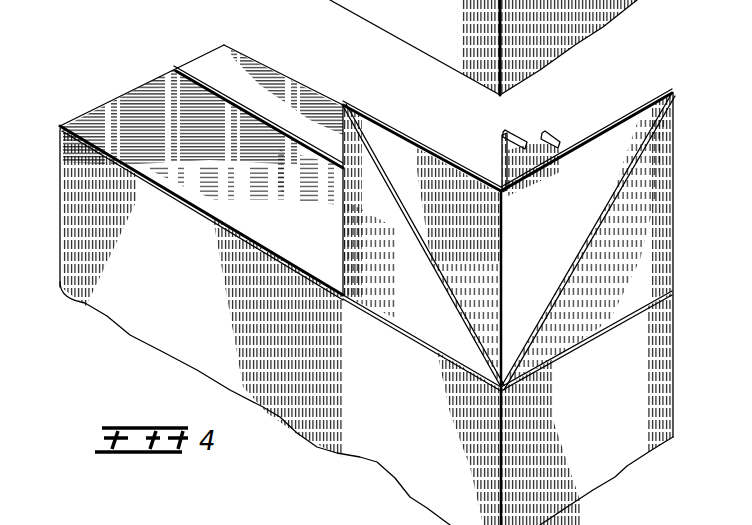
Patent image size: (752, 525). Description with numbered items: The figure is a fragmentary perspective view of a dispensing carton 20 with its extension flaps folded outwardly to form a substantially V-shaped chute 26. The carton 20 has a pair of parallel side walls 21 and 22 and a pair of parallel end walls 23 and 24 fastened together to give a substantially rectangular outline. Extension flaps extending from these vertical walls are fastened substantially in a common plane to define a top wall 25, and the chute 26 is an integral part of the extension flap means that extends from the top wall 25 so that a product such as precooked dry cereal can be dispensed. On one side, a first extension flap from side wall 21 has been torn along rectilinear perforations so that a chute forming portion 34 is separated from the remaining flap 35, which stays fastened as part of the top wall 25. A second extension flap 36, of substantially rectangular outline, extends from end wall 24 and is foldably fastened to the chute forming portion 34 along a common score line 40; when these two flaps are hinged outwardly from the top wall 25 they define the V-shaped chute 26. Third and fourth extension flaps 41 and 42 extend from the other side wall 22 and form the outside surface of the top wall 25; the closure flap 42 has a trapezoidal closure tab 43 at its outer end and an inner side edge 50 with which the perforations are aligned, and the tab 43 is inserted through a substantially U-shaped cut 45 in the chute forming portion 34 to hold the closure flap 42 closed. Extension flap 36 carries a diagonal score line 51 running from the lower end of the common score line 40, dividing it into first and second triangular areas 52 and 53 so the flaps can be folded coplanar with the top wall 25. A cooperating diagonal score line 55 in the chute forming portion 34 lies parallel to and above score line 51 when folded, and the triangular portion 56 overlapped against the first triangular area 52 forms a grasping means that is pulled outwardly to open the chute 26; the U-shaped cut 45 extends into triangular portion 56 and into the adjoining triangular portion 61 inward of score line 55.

The dispensing carton 20 is at (274, 52).
The side wall 21 is at (372, 447).
The side wall 22 is at (307, 93).
The end wall 23 is at (97, 95).
The end wall 24 is at (627, 457).
The top wall means 25 is at (193, 103).
The V-shaped chute means 26 is at (457, 141).
The chute forming portion 34 is at (395, 173).
The flap 35 is at (188, 183).
The extension flap 36 is at (655, 188).
The common score line 40 is at (503, 227).
The extension flap 41 is at (265, 85).
The closure flap 42 is at (512, 143).
The closure tab 43 is at (550, 141).
The U-shaped cut means 45 is at (480, 273).
The inner side edge 50 is at (498, 155).
The diagonal score line 51 is at (640, 148).
The first triangular area 52 is at (602, 138).
The second triangular area 53 is at (660, 215).
The cooperating score line 55 is at (458, 318).
The triangular portion 56 is at (487, 322).
The triangular portion 61 is at (372, 290).